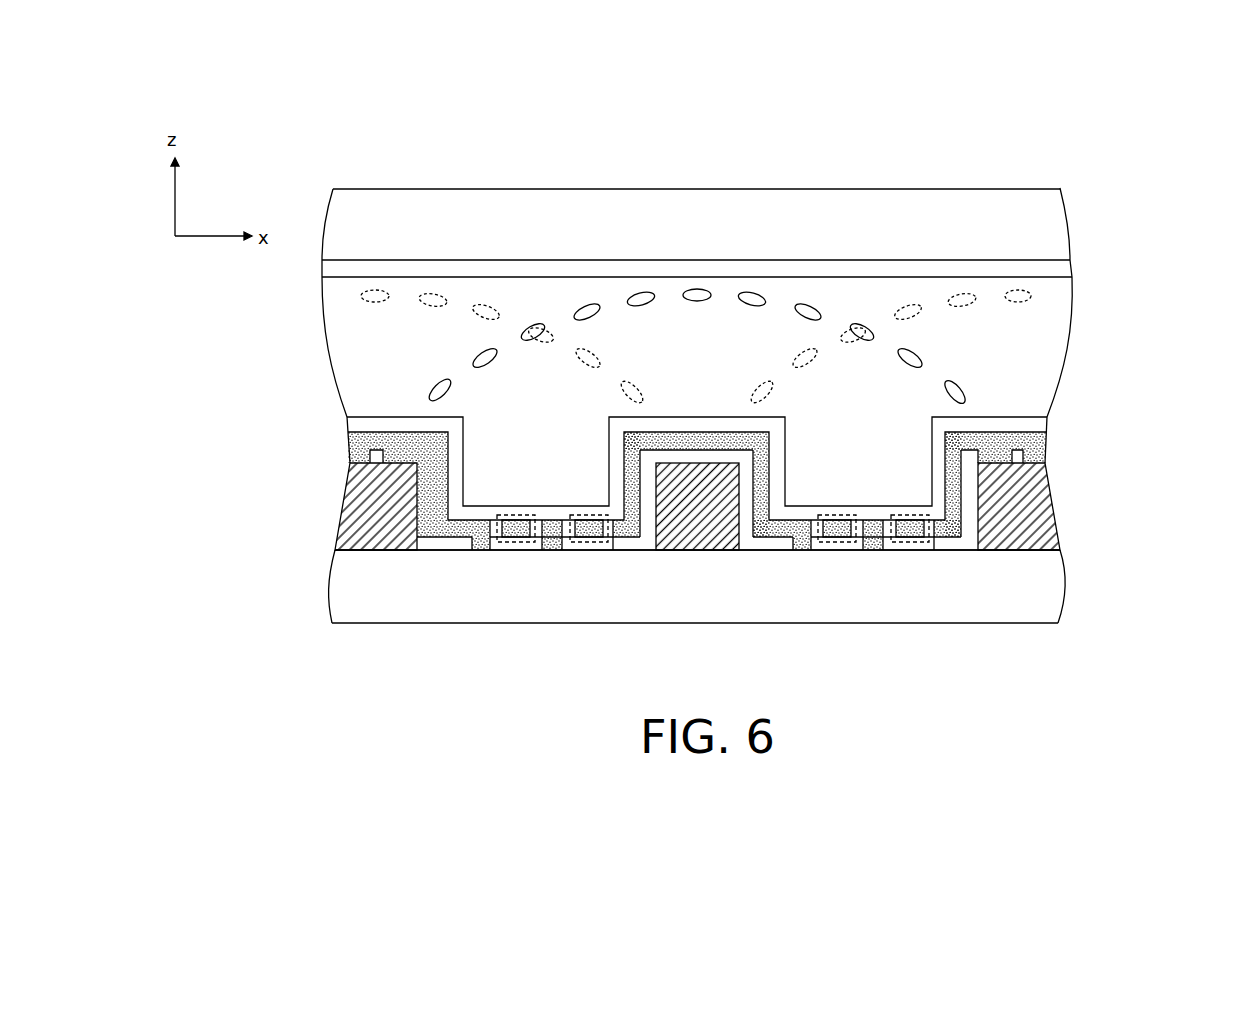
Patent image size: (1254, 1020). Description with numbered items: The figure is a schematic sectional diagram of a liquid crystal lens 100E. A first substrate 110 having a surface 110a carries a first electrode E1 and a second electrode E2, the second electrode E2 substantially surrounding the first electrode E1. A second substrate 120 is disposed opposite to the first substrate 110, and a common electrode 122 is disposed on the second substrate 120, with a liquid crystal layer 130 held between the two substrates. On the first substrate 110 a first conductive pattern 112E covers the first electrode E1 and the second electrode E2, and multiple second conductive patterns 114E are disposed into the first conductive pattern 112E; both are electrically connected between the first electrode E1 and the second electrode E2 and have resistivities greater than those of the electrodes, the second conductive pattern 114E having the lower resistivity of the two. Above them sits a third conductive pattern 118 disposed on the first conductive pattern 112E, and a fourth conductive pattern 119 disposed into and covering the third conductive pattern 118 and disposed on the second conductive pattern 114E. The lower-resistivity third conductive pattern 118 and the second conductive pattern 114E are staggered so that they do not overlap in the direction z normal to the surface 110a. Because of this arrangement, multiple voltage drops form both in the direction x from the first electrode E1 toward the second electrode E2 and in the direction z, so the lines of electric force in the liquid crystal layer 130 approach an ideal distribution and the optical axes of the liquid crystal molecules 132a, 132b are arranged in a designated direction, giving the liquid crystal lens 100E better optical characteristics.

The liquid crystal lens 100E is at (1235, 695).
The first substrate 110 is at (1038, 602).
The surface 110a is at (1018, 548).
The first conductive pattern 112E is at (925, 630).
The second conductive pattern 114E is at (880, 657).
The third conductive pattern 118 is at (916, 515).
The fourth conductive pattern 119 is at (867, 516).
The second substrate 120 is at (1055, 222).
The common electrode 122 is at (1055, 270).
The liquid crystal layer 130 is at (1045, 368).
The liquid crystal molecules 132a is at (1031, 296).
The liquid crystal molecules 132b is at (965, 388).
The first electrode E1 is at (697, 533).
The second electrode E2 is at (340, 522).